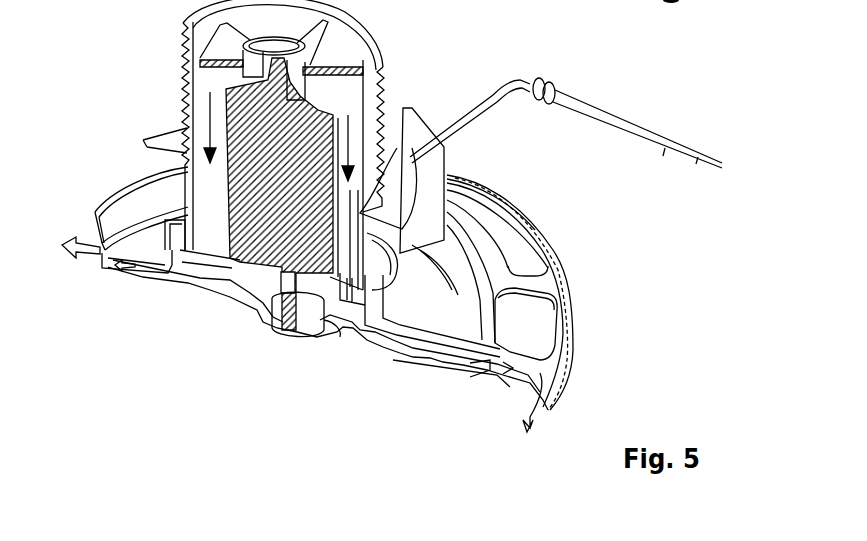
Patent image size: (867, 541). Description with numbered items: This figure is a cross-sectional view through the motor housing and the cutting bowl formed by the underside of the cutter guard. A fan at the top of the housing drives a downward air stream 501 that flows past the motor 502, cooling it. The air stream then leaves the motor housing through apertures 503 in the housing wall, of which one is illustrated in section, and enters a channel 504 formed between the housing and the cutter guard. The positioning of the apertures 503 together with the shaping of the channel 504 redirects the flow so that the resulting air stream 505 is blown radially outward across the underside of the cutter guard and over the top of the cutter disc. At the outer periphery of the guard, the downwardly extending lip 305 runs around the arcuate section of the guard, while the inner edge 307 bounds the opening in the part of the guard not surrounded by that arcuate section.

The air stream 501 is at (210, 108).
The motor 502 is at (258, 237).
The apertures of the motor housing 503 is at (230, 213).
The channel 504 is at (165, 232).
The air stream 505 is at (140, 270).
The downwardly extending lip 305 is at (570, 337).
The inner edge 307 is at (538, 318).